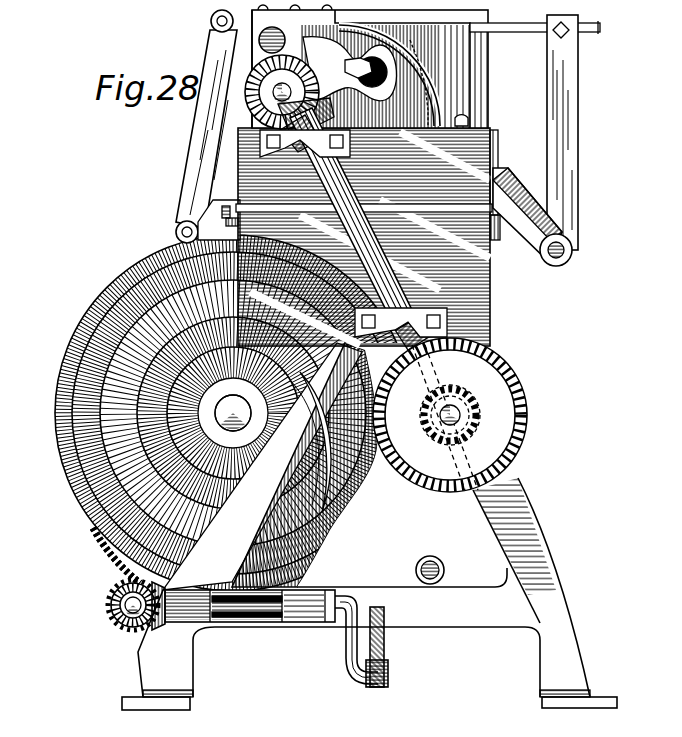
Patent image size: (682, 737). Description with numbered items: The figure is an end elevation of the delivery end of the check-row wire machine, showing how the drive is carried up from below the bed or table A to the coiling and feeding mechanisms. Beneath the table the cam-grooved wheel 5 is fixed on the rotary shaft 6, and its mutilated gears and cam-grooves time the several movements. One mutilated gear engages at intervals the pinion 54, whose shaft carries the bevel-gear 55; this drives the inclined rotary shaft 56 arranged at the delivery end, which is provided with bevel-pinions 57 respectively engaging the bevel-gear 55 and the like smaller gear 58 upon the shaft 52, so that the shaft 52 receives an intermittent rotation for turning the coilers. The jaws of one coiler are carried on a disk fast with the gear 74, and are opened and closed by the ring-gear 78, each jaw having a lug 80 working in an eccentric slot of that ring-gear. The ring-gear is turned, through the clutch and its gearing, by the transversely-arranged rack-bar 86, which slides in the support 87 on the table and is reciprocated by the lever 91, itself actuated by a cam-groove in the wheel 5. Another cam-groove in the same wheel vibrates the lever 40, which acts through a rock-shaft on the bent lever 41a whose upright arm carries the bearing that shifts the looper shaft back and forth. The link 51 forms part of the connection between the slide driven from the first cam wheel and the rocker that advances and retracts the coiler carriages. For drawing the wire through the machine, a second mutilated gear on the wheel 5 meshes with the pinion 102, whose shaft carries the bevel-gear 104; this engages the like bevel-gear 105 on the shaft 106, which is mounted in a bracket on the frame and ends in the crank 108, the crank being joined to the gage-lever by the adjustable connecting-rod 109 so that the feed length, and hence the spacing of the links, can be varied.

The cam-grooved wheel 5 is at (225, 413).
The rotary shaft 6 is at (233, 413).
The lever 40 is at (531, 230).
The bent lever 41a is at (539, 132).
The link 51 is at (300, 150).
The shaft 52 is at (303, 104).
The pinion 54 is at (453, 415).
The bevel-gear 55 is at (461, 415).
The inclined rotary shaft 56 is at (356, 229).
The bevel-pinion 57 is at (420, 318).
The gear 58 is at (272, 92).
The gear 74 is at (372, 128).
The ring-gear 78 is at (415, 35).
The lug 80 is at (260, 43).
The rack-bar 86 is at (367, 173).
The support 87 is at (370, 66).
The lever 91 is at (201, 126).
The pinion 102 is at (112, 590).
The bevel-gear 104 is at (122, 615).
The bevel-gear 105 is at (160, 628).
The shaft 106 is at (258, 623).
The crank 108 is at (347, 640).
The connecting-rod 109 is at (390, 644).
The bed or table A is at (242, 170).